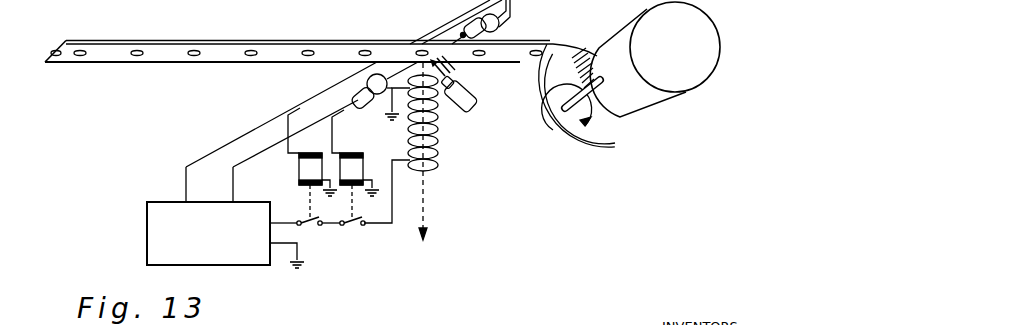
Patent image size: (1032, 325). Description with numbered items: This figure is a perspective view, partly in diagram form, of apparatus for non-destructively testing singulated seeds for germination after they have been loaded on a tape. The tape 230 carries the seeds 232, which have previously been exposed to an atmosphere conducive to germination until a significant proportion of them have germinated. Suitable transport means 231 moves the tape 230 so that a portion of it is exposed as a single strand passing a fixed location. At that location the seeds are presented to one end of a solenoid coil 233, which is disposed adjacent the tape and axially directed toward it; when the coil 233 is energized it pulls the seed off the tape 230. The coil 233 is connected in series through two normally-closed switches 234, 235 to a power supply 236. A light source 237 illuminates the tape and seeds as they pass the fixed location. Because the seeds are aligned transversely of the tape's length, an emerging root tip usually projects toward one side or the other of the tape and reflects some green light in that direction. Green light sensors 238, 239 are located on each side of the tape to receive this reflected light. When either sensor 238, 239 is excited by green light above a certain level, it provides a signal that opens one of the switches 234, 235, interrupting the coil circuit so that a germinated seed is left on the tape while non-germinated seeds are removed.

The tape 230 is at (176, 56).
The transport means 231 is at (661, 108).
The seeds 232 is at (392, 51).
The solenoid coil 233 is at (438, 141).
The normally-closed switch 234 is at (311, 230).
The normally-closed switch 235 is at (355, 230).
The power supply 236 is at (148, 228).
The light source 237 is at (468, 108).
The green light sensor 238 is at (368, 103).
The green light sensor 239 is at (497, 31).